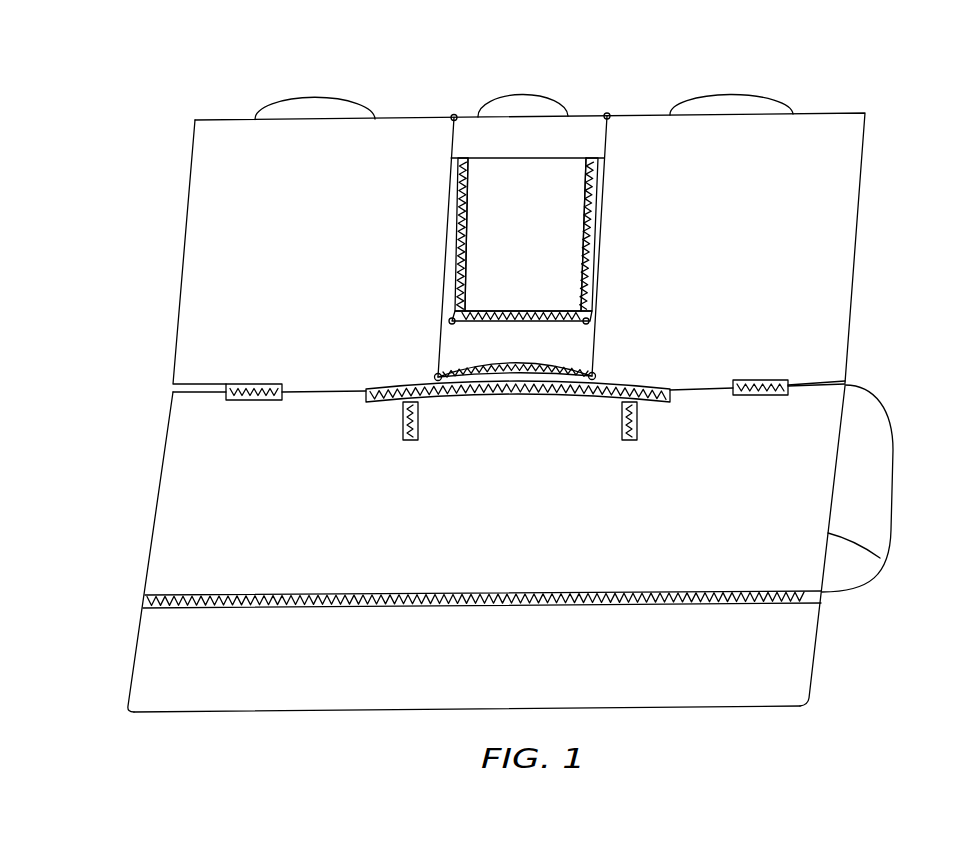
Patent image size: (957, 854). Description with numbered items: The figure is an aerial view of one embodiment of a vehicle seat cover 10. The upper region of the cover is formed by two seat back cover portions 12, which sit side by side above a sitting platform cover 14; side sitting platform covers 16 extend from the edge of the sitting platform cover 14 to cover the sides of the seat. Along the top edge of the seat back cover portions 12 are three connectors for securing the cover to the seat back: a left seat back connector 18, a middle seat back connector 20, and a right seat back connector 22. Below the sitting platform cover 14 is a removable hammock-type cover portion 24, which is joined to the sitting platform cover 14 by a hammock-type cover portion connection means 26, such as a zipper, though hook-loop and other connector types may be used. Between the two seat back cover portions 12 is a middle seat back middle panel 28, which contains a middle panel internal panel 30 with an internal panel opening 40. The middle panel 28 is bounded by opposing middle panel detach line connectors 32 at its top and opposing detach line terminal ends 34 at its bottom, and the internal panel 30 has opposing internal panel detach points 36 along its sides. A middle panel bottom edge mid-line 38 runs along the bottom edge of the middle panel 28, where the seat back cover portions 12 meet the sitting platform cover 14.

The vehicle seat cover 10 is at (104, 90).
The seat back cover portions 12 is at (193, 178).
The sitting platform cover 14 is at (159, 492).
The side sitting platform covers 16 is at (876, 491).
The left seat back connector 18 is at (318, 97).
The middle seat back connector 20 is at (525, 95).
The right seat back connector 22 is at (731, 94).
The removable hammock-type cover portion 24 is at (818, 650).
The hammock-type cover portion connection means 26 is at (145, 603).
The middle seat back middle panel 28 is at (460, 138).
The middle panel internal panel 30 is at (549, 215).
The middle panel detach line connectors 32 is at (454, 114).
The detach line terminal ends 34 is at (436, 375).
The internal panel detach points 36 is at (469, 160).
The middle panel bottom edge mid-line 38 is at (515, 394).
The internal panel opening 40 is at (528, 310).